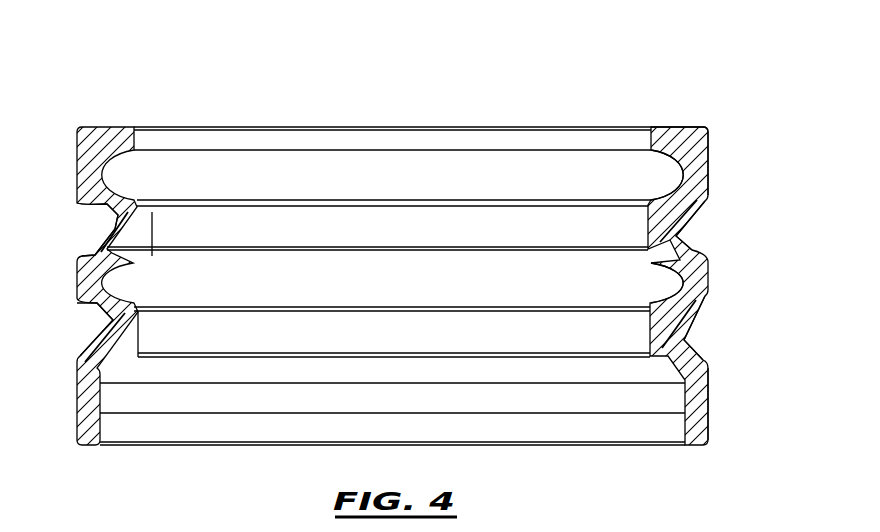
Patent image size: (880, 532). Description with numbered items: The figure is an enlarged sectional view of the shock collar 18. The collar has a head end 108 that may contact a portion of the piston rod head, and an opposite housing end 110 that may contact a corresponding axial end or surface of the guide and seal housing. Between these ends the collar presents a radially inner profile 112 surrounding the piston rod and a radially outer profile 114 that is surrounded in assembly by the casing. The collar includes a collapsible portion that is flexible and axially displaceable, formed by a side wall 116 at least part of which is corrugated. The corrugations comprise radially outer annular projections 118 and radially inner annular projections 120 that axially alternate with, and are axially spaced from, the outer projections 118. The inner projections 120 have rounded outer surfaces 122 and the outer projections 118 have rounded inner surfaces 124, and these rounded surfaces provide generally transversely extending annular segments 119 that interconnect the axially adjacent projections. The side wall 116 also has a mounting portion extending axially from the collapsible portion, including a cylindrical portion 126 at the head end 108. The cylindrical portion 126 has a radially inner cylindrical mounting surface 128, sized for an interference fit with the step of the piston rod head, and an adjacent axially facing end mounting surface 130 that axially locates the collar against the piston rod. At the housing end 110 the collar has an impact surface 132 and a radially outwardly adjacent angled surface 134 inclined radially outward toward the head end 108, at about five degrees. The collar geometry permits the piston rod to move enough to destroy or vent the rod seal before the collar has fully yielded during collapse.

The housing end 110 is at (160, 95).
The shock collar 18 is at (712, 76).
The head end 108 is at (136, 465).
The radially inner profile 112 is at (160, 228).
The radially outer profile 114 is at (88, 232).
The side wall 116 is at (716, 268).
The radially outer annular projections 118 is at (706, 171).
The transversely extending annular segments 119 is at (83, 207).
The radially inner annular projections 120 is at (660, 231).
The rounded outer surfaces 122 is at (678, 229).
The rounded inner surfaces 124 is at (668, 182).
The cylindrical portion 126 is at (707, 398).
The radially inner cylindrical mounting surface 128 is at (688, 385).
The axially facing end mounting surface 130 is at (704, 448).
The impact surface 132 is at (672, 126).
The angled surface 134 is at (706, 128).